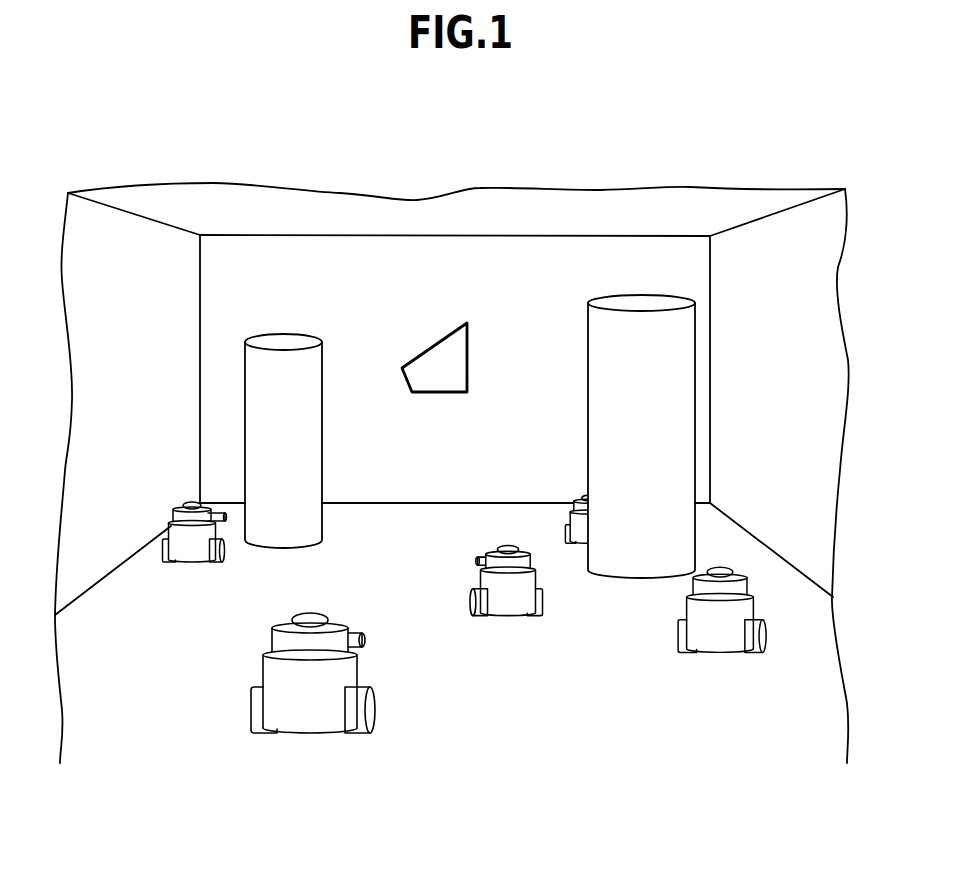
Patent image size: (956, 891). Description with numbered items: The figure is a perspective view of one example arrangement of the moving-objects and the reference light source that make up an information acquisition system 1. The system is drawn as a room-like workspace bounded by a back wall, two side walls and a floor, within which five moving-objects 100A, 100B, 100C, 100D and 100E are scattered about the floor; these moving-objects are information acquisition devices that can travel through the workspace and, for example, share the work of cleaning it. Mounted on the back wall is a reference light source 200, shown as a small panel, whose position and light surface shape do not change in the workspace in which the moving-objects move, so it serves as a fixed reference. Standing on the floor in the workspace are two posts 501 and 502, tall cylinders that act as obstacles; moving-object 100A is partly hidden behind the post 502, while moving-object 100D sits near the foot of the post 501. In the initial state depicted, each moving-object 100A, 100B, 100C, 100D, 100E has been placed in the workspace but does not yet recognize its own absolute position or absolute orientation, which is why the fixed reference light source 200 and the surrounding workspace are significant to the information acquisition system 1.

The information acquisition system 1 is at (497, 193).
The post 501 is at (282, 340).
The post 502 is at (635, 302).
The reference light source 200 is at (430, 369).
The moving-object 100A is at (580, 528).
The moving-object 100B is at (508, 595).
The moving-object 100C is at (307, 707).
The moving-object 100D is at (192, 547).
The moving-object 100E is at (722, 638).